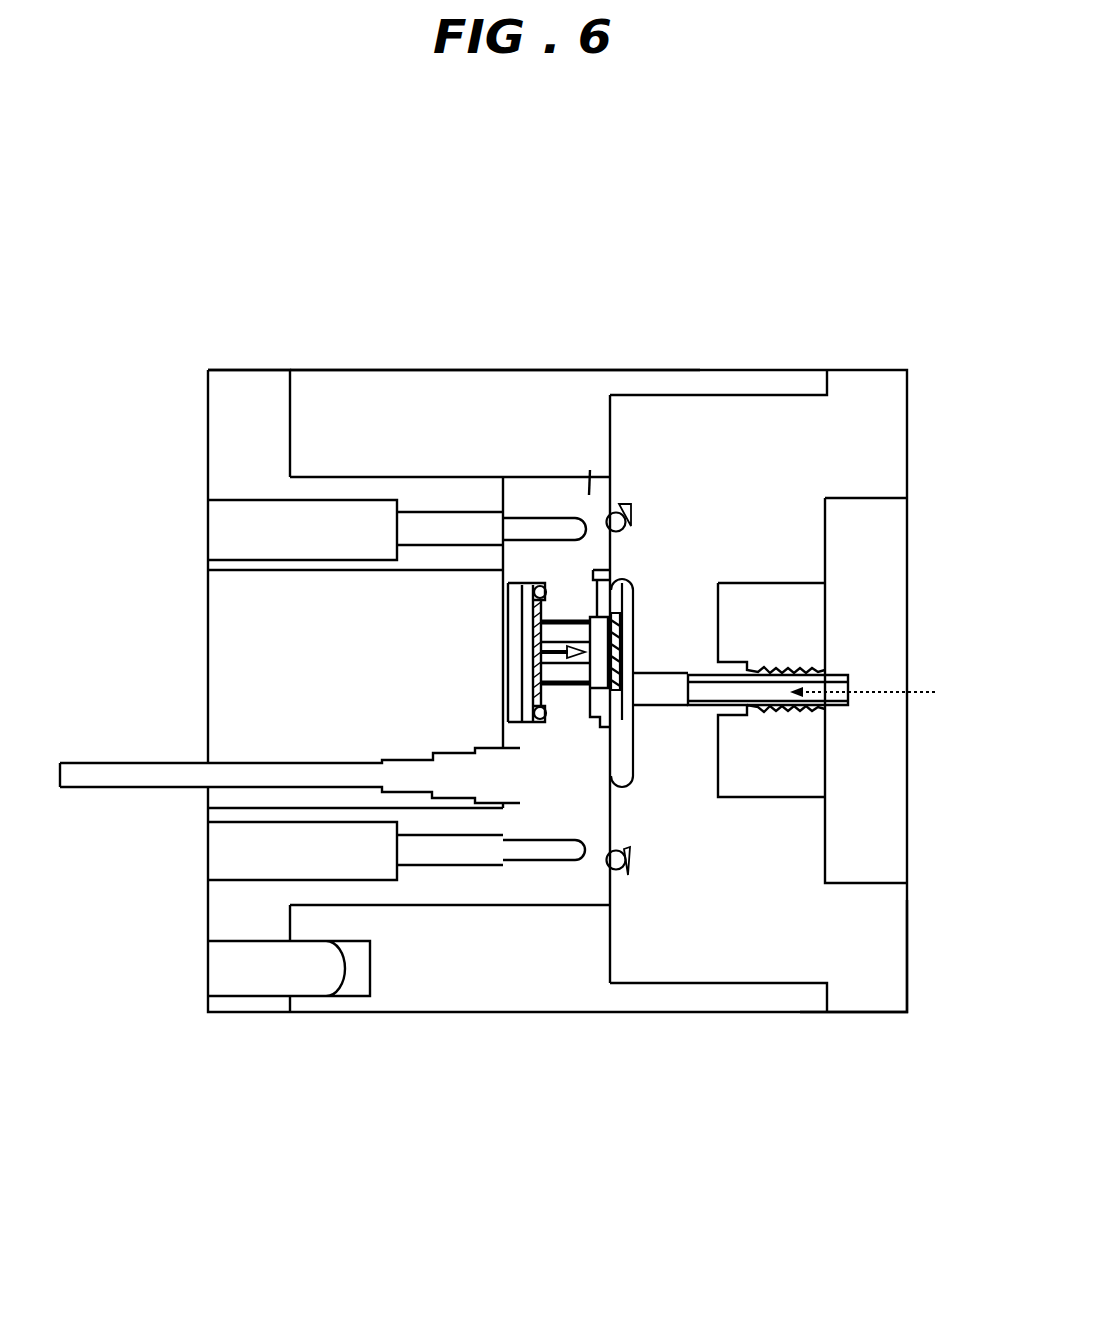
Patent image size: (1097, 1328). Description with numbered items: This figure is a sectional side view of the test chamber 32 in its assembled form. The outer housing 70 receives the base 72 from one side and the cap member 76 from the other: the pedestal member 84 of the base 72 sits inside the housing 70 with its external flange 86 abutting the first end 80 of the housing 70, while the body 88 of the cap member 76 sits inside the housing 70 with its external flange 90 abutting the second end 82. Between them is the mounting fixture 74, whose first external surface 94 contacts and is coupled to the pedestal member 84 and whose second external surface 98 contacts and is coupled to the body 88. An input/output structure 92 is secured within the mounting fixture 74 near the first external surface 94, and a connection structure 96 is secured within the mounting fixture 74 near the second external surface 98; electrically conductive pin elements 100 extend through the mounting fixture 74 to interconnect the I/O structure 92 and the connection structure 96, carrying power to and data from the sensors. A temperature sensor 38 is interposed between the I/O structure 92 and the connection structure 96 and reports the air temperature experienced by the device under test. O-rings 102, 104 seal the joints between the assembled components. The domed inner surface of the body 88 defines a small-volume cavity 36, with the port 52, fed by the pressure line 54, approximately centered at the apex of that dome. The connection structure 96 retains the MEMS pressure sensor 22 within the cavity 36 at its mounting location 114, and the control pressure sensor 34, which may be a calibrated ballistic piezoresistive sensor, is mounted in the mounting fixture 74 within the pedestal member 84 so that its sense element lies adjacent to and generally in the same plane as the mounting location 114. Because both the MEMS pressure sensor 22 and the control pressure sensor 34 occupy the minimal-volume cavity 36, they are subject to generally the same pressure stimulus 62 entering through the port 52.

The MEMS pressure sensor 22 is at (610, 648).
The test chamber 32 is at (340, 1224).
The control pressure sensor 34 is at (600, 773).
The cavity 36 is at (622, 750).
The temperature sensor 38 is at (555, 657).
The port 52 is at (637, 685).
The pressure line 54 is at (773, 670).
The pressure stimulus 62 is at (838, 693).
The housing 70 is at (488, 382).
The base 72 is at (220, 374).
The mounting fixture 74 is at (589, 495).
The cap member 76 is at (892, 380).
The first end 80 is at (288, 403).
The second end 82 is at (828, 387).
The pedestal member 84 is at (422, 880).
The external flange 86 is at (227, 423).
The body 88 is at (732, 972).
The external flange 90 is at (882, 993).
The input/output structure 92 is at (530, 615).
The first external surface 94 is at (503, 497).
The connection structure 96 is at (602, 632).
The second external surface 98 is at (615, 884).
The electrically conductive pin elements 100 is at (555, 617).
The O-ring 102 is at (538, 590).
The O-ring 104 is at (626, 860).
The mounting location 114 is at (625, 620).